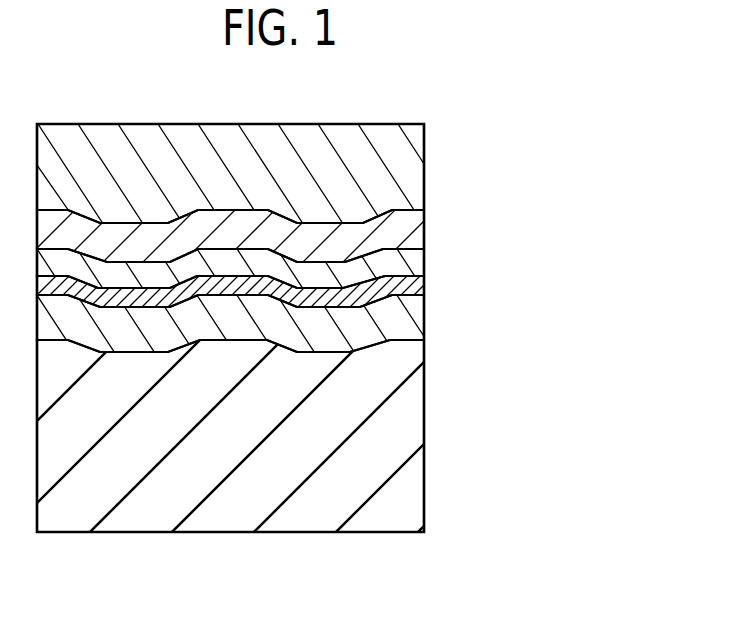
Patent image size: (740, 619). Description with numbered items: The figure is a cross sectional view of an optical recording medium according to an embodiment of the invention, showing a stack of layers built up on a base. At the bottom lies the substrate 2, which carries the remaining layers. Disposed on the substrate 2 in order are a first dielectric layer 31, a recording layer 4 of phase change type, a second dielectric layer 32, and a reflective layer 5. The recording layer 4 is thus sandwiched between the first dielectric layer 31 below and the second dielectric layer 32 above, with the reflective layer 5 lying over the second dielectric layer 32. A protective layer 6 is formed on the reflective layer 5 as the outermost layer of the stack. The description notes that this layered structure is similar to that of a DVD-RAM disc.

The substrate 2 is at (421, 427).
The first dielectric layer 31 is at (421, 317).
The recording layer 4 is at (421, 282).
The second dielectric layer 32 is at (421, 260).
The reflective layer 5 is at (421, 235).
The protective layer 6 is at (421, 172).